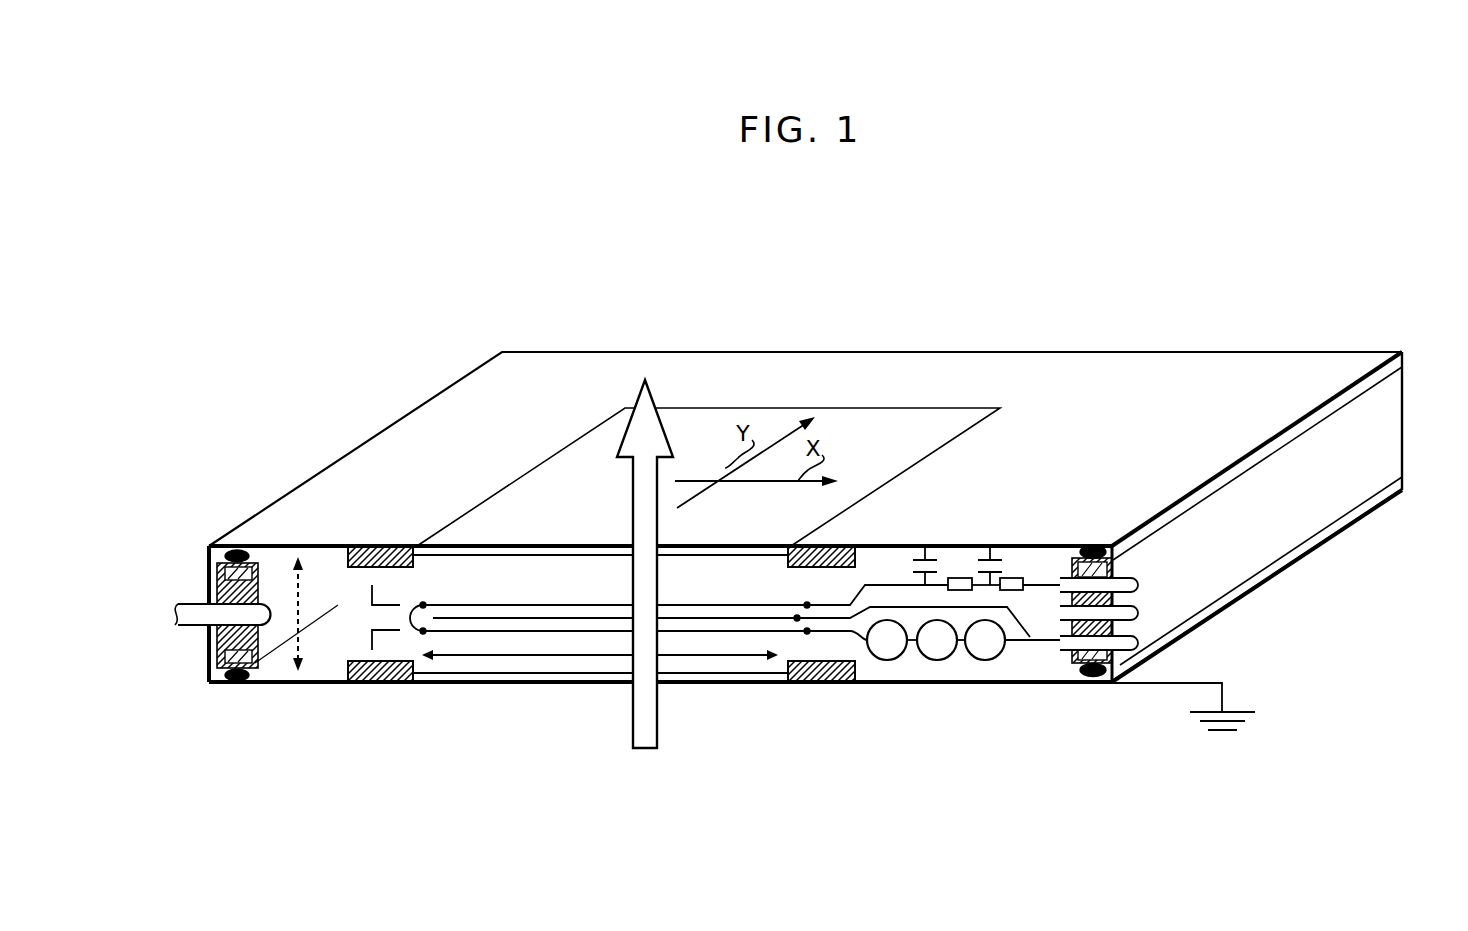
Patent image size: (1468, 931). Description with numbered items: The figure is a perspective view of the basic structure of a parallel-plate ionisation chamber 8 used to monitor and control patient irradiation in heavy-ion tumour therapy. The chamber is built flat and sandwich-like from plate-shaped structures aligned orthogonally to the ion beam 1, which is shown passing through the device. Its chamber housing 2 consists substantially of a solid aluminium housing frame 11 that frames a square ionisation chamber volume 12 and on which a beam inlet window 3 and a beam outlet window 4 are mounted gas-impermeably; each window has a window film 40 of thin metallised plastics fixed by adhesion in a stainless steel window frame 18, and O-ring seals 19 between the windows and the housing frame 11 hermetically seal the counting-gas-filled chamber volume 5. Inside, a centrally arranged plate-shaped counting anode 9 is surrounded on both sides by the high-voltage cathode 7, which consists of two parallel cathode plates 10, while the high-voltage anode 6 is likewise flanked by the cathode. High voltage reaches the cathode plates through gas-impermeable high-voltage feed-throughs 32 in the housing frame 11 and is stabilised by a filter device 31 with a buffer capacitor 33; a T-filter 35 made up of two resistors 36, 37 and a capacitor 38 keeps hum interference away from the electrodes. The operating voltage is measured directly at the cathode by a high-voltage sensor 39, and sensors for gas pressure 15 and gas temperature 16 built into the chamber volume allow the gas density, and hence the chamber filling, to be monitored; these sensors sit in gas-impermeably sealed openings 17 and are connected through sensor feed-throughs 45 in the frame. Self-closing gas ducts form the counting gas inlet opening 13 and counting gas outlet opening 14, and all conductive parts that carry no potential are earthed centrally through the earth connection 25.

The ion beam 1 is at (645, 735).
The chamber housing 2 is at (1308, 364).
The beam inlet window 3 is at (550, 683).
The beam outlet window 4 is at (463, 552).
The chamber volume 5 is at (460, 642).
The high-voltage anode 6 is at (617, 605).
The high-voltage cathode 7 is at (620, 618).
The ionisation chamber 8 is at (1100, 300).
The counting anode 9 is at (636, 556).
The cathode plates 10 is at (620, 632).
The housing frame 11 is at (207, 595).
The ionisation chamber volume 12 is at (600, 707).
The counting gas inlet opening 13 is at (1138, 613).
The counting gas outlet opening 14 is at (173, 618).
The gas pressure sensor 15 is at (932, 660).
The gas temperature sensor 16 is at (980, 660).
The gas-impermeably sealed openings 17 is at (993, 675).
The window frame 18 is at (252, 563).
The O-ring seal 19 is at (215, 545).
The earth connection 25 is at (1220, 712).
The filter device 31 is at (907, 565).
The high-voltage feed-through 32 is at (1138, 585).
The buffer capacitor 33 is at (943, 562).
The T-filter 35 is at (1018, 562).
The resistor 36 is at (955, 578).
The resistor 37 is at (1023, 577).
The capacitor 38 is at (1005, 551).
The high-voltage sensor 39 is at (883, 660).
The window film 40 is at (757, 556).
The sensor feed-through 45 is at (1138, 643).